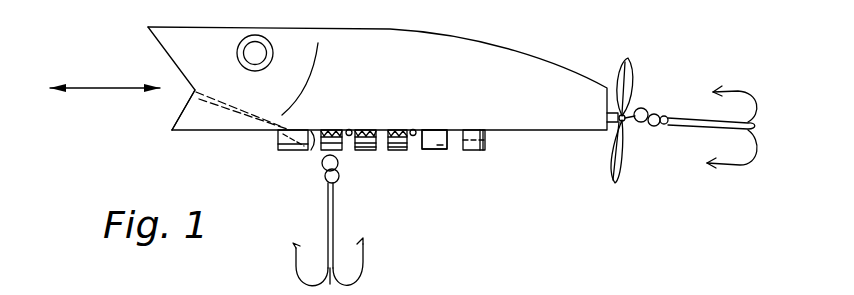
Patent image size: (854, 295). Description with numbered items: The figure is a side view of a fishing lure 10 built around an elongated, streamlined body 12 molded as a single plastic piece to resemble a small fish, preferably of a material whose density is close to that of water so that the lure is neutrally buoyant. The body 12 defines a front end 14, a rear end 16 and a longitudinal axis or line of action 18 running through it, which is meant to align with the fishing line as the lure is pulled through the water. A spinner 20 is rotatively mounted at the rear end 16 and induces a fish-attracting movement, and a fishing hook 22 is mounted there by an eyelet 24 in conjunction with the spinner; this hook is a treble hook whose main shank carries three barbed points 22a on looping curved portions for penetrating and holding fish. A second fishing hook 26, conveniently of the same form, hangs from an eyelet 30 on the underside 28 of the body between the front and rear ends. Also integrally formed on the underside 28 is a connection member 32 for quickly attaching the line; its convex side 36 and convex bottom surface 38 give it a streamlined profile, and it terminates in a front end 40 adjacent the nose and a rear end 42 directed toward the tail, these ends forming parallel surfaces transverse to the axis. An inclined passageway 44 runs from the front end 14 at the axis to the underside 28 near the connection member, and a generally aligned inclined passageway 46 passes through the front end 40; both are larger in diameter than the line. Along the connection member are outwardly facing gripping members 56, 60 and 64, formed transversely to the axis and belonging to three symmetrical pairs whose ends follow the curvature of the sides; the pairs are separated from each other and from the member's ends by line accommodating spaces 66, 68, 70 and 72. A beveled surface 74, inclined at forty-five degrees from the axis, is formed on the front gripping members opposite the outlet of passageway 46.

The fishing lure 10 is at (395, 21).
The body 12 is at (503, 57).
The front end 14 is at (166, 62).
The rear end 16 is at (698, 131).
The longitudinal axis 18 is at (90, 88).
The spinner 20 is at (630, 60).
The fishing hook 22 is at (685, 128).
The barbed points 22a is at (708, 164).
The eyelet 24 is at (638, 107).
The second fishing hook 26 is at (334, 217).
The underside 28 is at (575, 133).
The eyelet 30 is at (338, 174).
The connection member 32 is at (260, 144).
The convex side 36 is at (412, 294).
The convex bottom surface 38 is at (440, 174).
The front end of connection member 40 is at (287, 152).
The rear end of connection member 42 is at (443, 153).
The inclined passageway 44 is at (212, 122).
The inclined passageway 46 is at (293, 129).
The gripping member 56 is at (330, 130).
The gripping member 60 is at (368, 130).
The gripping member 64 is at (402, 152).
The line accommodating space 66 is at (313, 150).
The line accommodating space 68 is at (348, 130).
The line accommodating space 70 is at (380, 152).
The line accommodating space 72 is at (415, 130).
The beveled surface 74 is at (321, 163).